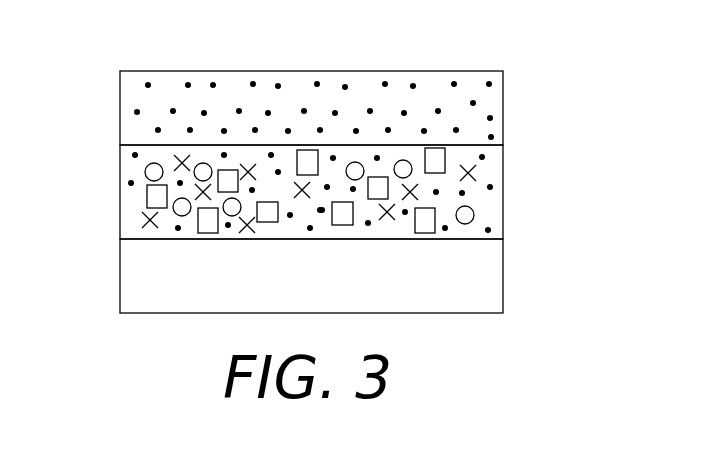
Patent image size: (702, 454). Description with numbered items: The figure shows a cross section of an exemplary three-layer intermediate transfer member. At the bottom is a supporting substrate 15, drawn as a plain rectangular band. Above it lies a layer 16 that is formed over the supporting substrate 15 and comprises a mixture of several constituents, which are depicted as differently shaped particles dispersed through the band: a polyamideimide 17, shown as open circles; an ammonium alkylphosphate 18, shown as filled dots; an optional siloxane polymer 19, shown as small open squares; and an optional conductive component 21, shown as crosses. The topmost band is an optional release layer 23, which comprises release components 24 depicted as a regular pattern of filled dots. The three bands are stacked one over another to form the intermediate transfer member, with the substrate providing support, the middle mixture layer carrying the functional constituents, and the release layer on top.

The supporting substrate 15 is at (119, 273).
The layer 16 is at (119, 177).
The polyamideimide 17 is at (475, 215).
The ammonium alkylphosphate 18 is at (493, 188).
The siloxane polymer 19 is at (147, 197).
The conductive component 21 is at (478, 171).
The release layer 23 is at (505, 101).
The release components 24 is at (187, 83).